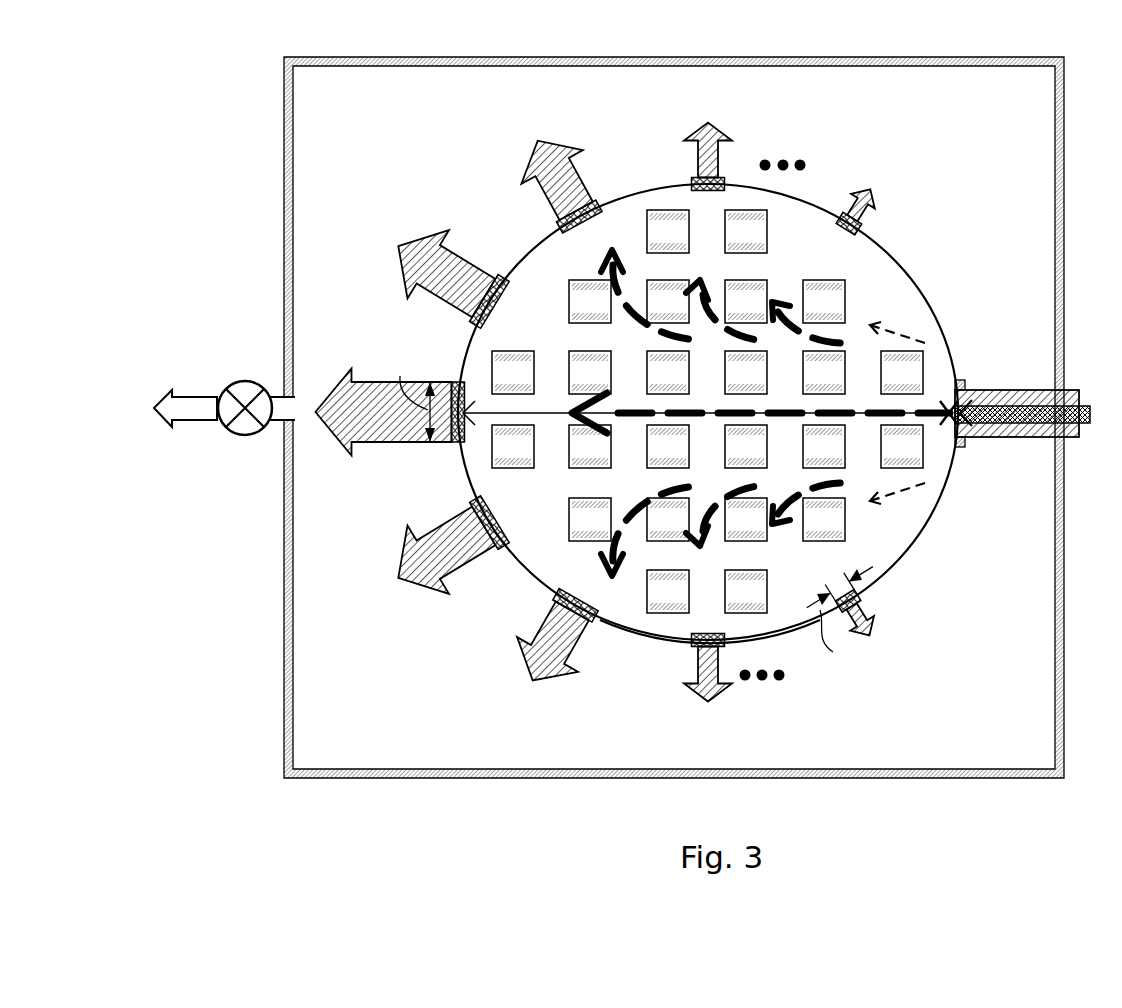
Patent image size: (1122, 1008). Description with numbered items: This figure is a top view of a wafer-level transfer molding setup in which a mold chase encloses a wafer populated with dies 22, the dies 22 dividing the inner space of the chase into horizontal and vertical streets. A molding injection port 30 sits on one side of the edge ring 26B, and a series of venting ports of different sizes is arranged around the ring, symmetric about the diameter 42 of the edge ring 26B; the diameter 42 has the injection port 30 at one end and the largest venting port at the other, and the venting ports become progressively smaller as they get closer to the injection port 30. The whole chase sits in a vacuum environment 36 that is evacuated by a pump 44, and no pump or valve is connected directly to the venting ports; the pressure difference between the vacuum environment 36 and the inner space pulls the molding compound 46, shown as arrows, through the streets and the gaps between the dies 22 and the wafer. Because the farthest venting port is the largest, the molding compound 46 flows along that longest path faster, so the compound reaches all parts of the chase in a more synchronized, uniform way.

The dies 22 is at (707, 411).
The edge ring 26B is at (795, 634).
The molding injection port 30 is at (965, 442).
The vacuum environment 36 is at (1064, 660).
The diameter 42 is at (960, 385).
The pump 44 is at (232, 436).
The molding compound 46 is at (680, 338).